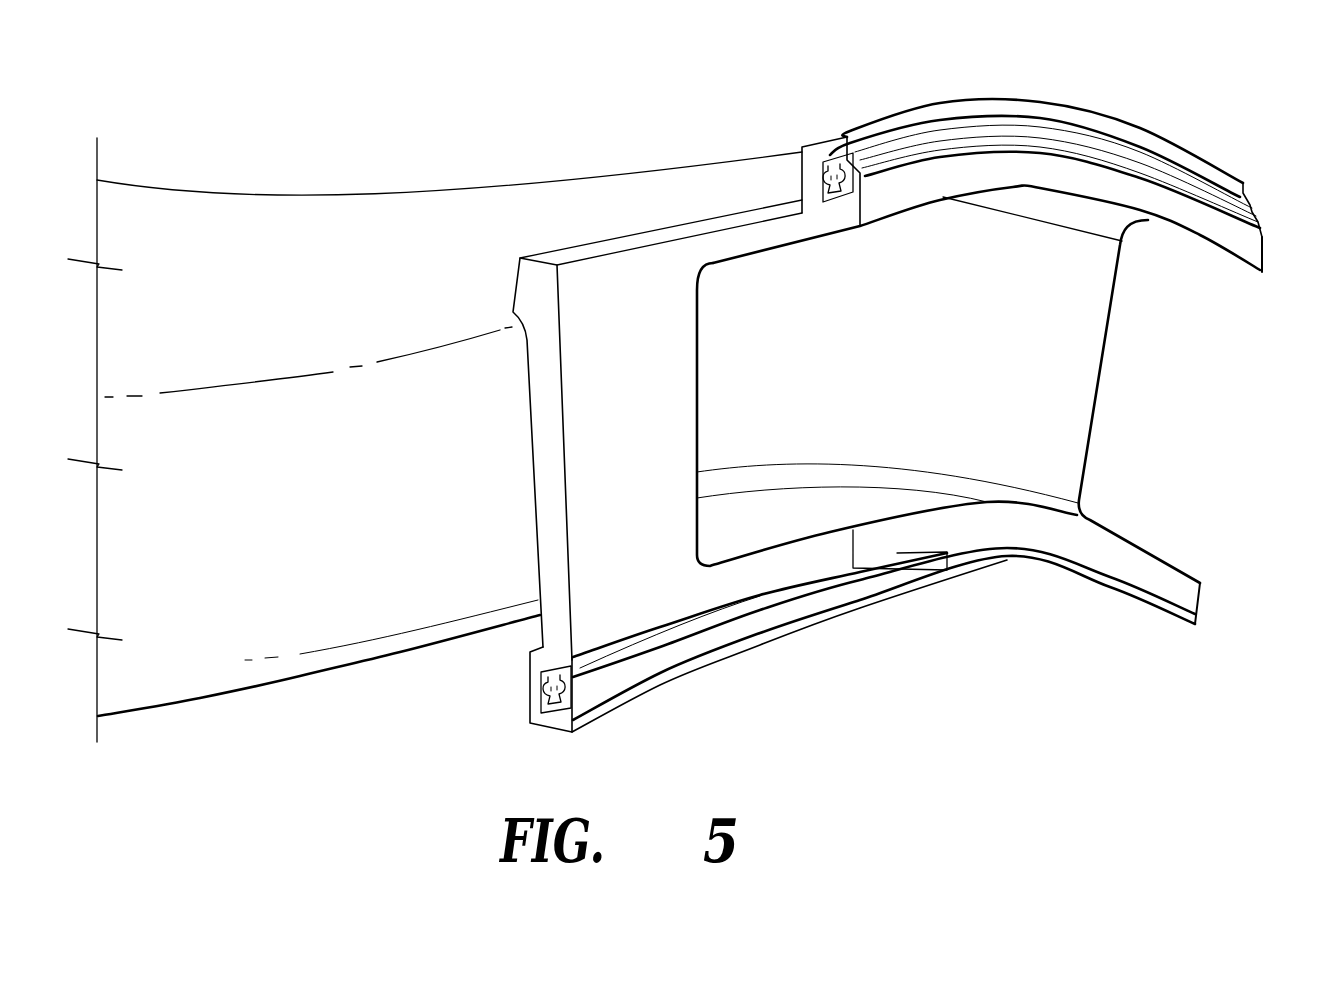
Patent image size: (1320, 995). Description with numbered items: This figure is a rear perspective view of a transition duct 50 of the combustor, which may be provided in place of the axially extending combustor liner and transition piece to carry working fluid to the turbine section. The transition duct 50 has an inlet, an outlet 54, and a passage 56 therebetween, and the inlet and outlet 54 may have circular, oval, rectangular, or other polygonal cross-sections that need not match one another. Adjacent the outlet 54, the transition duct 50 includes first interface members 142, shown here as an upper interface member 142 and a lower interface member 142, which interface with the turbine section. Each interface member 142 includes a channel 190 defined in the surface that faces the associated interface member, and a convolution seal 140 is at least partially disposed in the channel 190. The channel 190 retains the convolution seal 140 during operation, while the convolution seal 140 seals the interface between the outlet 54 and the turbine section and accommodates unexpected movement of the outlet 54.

The transition duct 50 is at (231, 125).
The outlet 54 is at (1210, 443).
The passage 56 is at (390, 212).
The convolution seal 140 is at (895, 157).
The first interface member 142 is at (795, 145).
The channel 190 is at (820, 191).